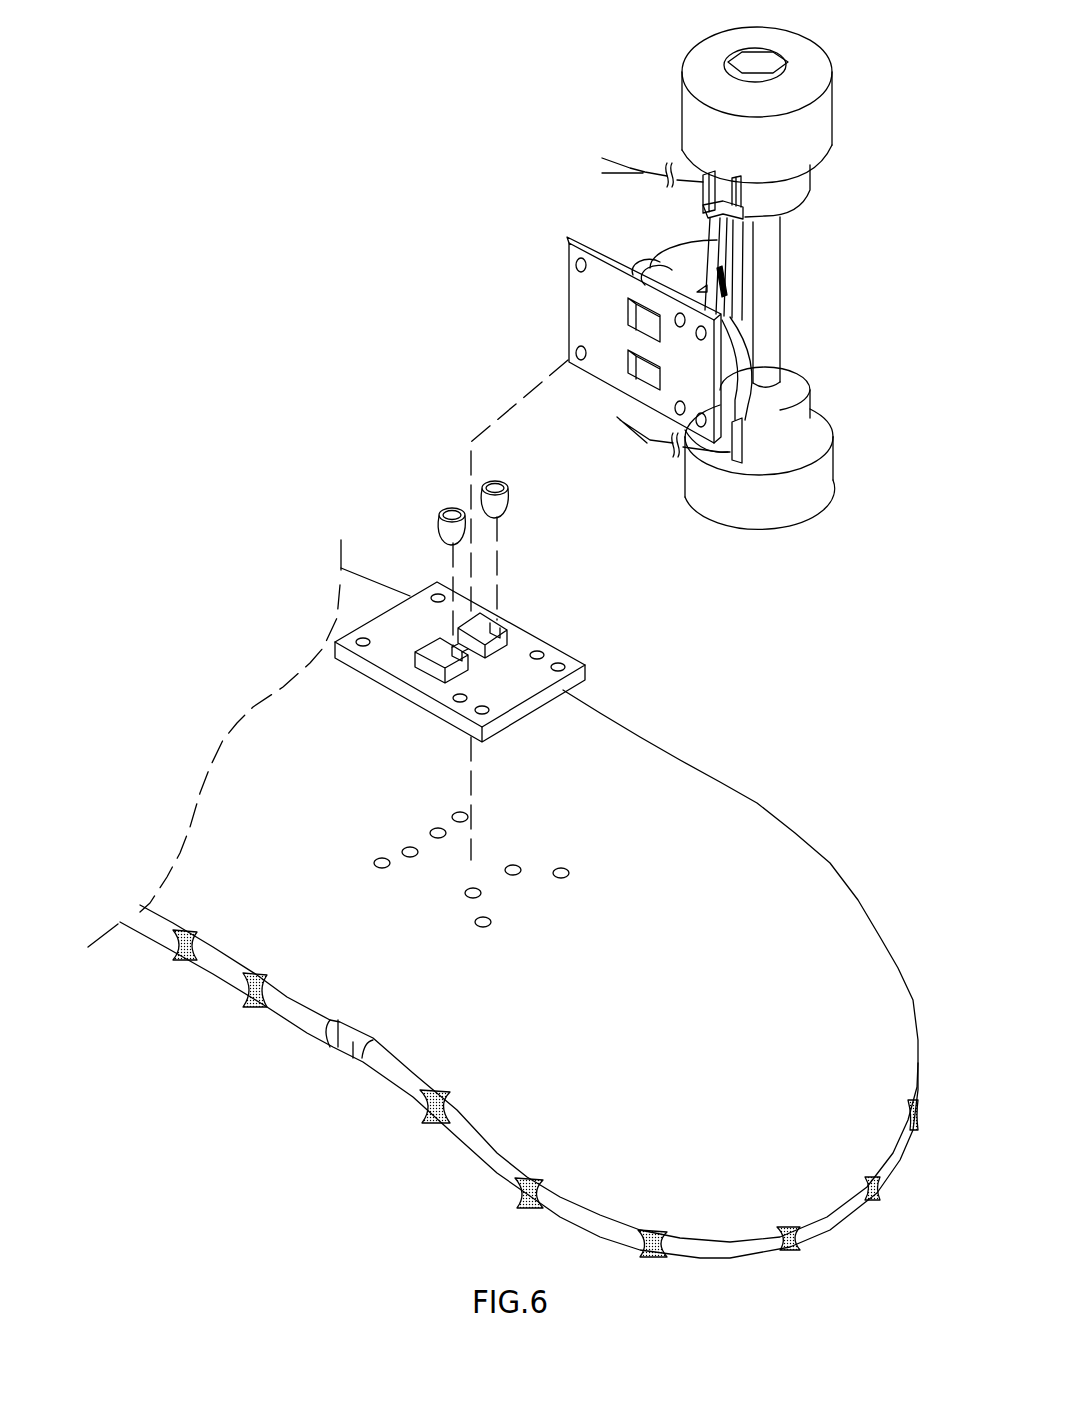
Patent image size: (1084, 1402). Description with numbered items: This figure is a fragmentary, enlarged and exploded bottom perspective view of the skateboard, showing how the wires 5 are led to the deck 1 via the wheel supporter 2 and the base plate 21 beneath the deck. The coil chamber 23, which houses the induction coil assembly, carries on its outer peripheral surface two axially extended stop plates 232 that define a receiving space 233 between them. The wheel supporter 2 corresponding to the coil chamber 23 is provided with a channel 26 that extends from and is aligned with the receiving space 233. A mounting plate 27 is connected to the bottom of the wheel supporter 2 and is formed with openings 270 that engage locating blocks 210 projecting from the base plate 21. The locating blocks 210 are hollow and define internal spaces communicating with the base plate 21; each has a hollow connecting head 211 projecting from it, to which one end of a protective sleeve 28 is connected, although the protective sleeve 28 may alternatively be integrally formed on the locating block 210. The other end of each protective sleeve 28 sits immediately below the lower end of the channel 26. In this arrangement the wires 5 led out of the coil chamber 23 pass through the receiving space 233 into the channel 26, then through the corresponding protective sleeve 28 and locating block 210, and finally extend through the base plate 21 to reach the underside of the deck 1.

The deck 1 is at (737, 842).
The wheel supporter 2 is at (767, 300).
The wires 5 is at (707, 182).
The base plate 21 is at (523, 643).
The locating blocks 210 is at (427, 645).
The hollow connecting head 211 is at (465, 657).
The coil chamber 23 is at (783, 188).
The stop plates 232 is at (705, 202).
The receiving space 233 is at (723, 183).
The channel 26 is at (727, 243).
The mounting plate 27 is at (583, 307).
The openings 270 is at (643, 365).
The protective sleeve 28 is at (450, 530).